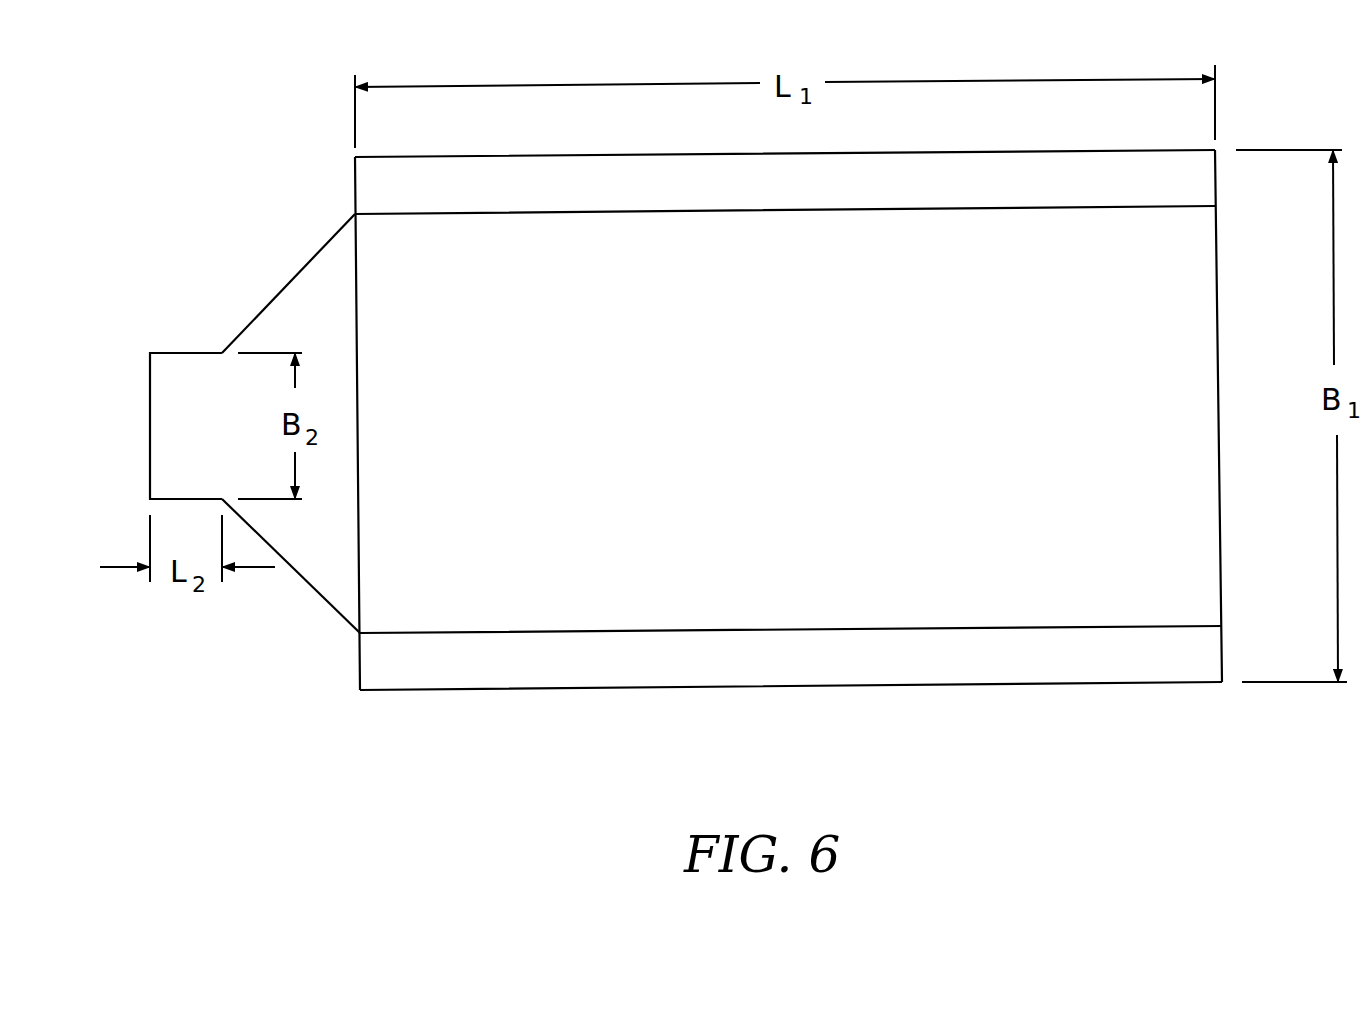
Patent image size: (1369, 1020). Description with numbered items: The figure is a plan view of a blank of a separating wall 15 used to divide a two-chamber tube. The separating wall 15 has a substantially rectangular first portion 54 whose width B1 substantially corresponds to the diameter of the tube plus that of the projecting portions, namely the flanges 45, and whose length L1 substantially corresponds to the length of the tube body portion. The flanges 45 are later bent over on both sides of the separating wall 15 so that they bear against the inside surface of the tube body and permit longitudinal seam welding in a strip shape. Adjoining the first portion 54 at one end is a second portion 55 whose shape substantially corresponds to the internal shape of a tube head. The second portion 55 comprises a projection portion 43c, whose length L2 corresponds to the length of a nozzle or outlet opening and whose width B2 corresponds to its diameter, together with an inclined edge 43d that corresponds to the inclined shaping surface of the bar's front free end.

The separating wall 15 is at (713, 530).
The projection portion 43c is at (167, 366).
The inclined edge 43d is at (287, 287).
The flanges 45 is at (1172, 668).
The first portion 54 is at (1200, 262).
The second portion 55 is at (343, 600).